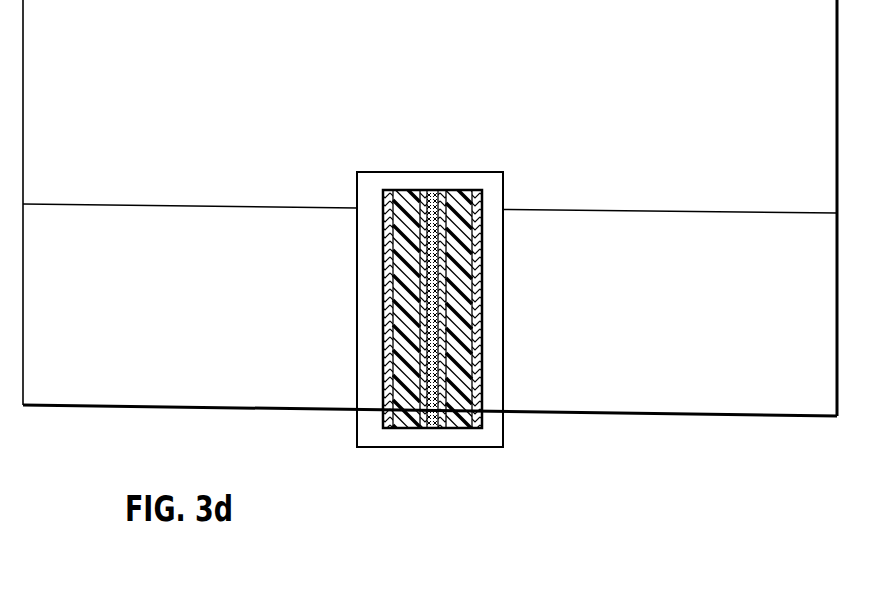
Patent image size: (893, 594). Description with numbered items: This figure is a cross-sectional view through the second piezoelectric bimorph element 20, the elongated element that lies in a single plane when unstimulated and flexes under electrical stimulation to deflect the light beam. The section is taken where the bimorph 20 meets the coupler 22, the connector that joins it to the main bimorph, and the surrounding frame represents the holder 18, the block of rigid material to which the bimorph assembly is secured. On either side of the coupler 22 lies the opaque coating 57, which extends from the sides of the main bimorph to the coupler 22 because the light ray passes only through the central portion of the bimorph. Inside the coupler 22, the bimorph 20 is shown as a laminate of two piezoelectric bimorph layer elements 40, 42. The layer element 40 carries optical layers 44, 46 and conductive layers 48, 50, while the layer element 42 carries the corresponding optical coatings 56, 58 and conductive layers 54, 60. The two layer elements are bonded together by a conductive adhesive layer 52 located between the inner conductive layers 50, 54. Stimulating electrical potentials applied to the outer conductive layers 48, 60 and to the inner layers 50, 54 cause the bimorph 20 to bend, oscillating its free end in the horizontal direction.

The holder 18 is at (439, 82).
The opaque coating 57 is at (186, 281).
The coupler 22 is at (486, 180).
The piezoelectric bimorph element 20 is at (378, 237).
The conductive layer 60 is at (386, 287).
The optical coating 58 is at (386, 304).
The optical coating 56 is at (403, 381).
The conductive layer 54 is at (410, 411).
The piezoelectric bimorph layer element 42 is at (392, 338).
The conductive adhesive layer 52 is at (428, 429).
The piezoelectric bimorph layer element 40 is at (480, 290).
The optical layer 44 is at (478, 263).
The optical layer 46 is at (470, 340).
The conductive layer 50 is at (470, 378).
The conductive layer 48 is at (478, 236).